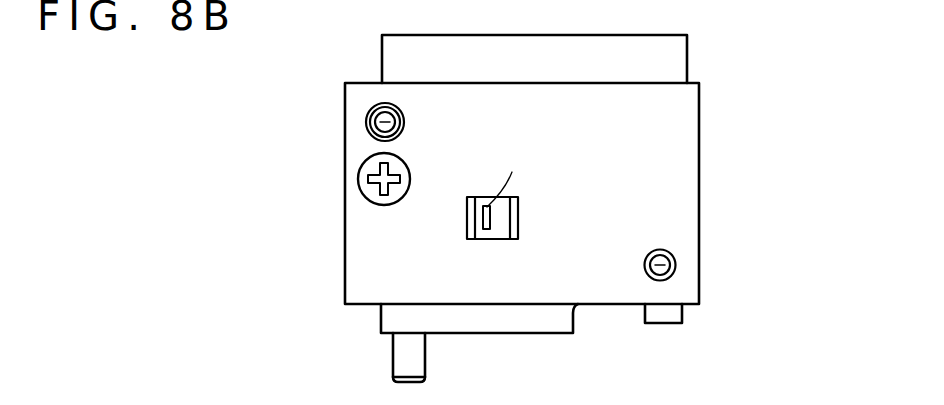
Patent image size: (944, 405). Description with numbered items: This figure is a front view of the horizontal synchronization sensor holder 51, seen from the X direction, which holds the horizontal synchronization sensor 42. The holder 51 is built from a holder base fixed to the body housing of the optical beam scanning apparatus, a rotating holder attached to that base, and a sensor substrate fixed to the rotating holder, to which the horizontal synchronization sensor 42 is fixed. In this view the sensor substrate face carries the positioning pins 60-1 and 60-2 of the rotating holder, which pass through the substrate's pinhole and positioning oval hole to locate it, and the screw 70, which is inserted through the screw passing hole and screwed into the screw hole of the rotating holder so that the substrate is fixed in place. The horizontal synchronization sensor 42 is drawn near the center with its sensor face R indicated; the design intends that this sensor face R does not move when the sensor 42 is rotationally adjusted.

The horizontal synchronization sensor holder 51 is at (783, 182).
The positioning pin 60-1 is at (675, 258).
The positioning pin 60-2 is at (366, 121).
The screw 70 is at (361, 168).
The horizontal synchronization sensor 42 is at (467, 214).